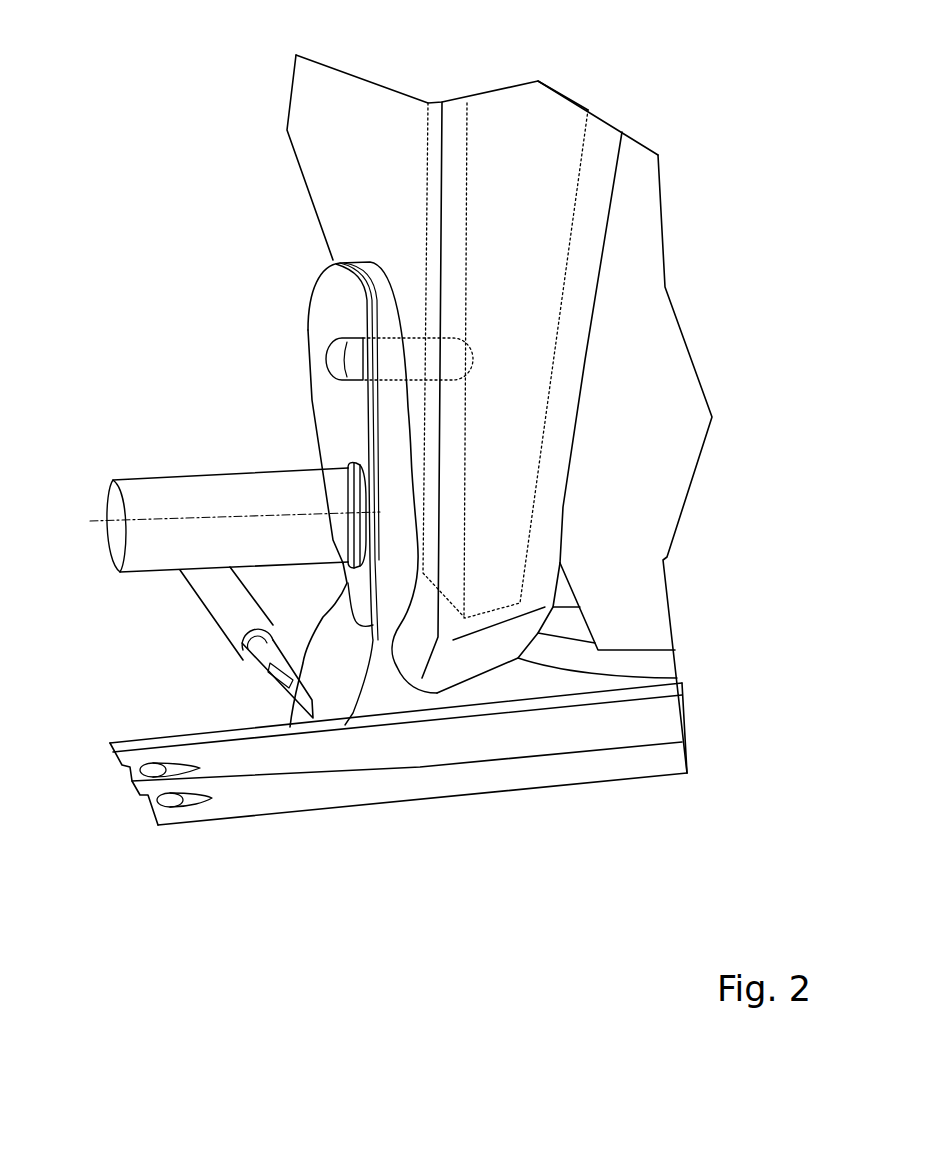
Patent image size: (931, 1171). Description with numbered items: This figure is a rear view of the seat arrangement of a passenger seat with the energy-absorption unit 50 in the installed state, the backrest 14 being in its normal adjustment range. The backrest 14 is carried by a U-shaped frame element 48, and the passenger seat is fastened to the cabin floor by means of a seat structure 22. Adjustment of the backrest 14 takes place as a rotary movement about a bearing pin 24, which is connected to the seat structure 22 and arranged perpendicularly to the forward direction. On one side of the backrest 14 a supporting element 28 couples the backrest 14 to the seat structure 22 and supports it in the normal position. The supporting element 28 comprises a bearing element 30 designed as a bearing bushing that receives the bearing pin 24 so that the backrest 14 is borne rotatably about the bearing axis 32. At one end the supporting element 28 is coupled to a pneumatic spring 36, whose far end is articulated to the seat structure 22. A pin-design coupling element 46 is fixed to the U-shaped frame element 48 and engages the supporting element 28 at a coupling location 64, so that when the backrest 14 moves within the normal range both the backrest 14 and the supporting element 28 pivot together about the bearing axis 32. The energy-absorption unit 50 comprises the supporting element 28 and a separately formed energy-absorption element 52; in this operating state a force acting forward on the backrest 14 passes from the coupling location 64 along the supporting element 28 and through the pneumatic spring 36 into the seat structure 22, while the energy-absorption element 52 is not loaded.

The backrest 14 is at (615, 255).
The seat structure 22 is at (538, 797).
The bearing pin 24 is at (242, 493).
The supporting element 28 is at (343, 680).
The bearing element 30 is at (338, 462).
The bearing axis 32 is at (95, 523).
The pneumatic spring 36 is at (215, 600).
The coupling element 46 is at (343, 352).
The U-shaped frame element 48 is at (527, 205).
The energy-absorption unit 50 is at (290, 262).
The energy-absorption element 52 is at (323, 373).
The coupling location 64 is at (460, 372).